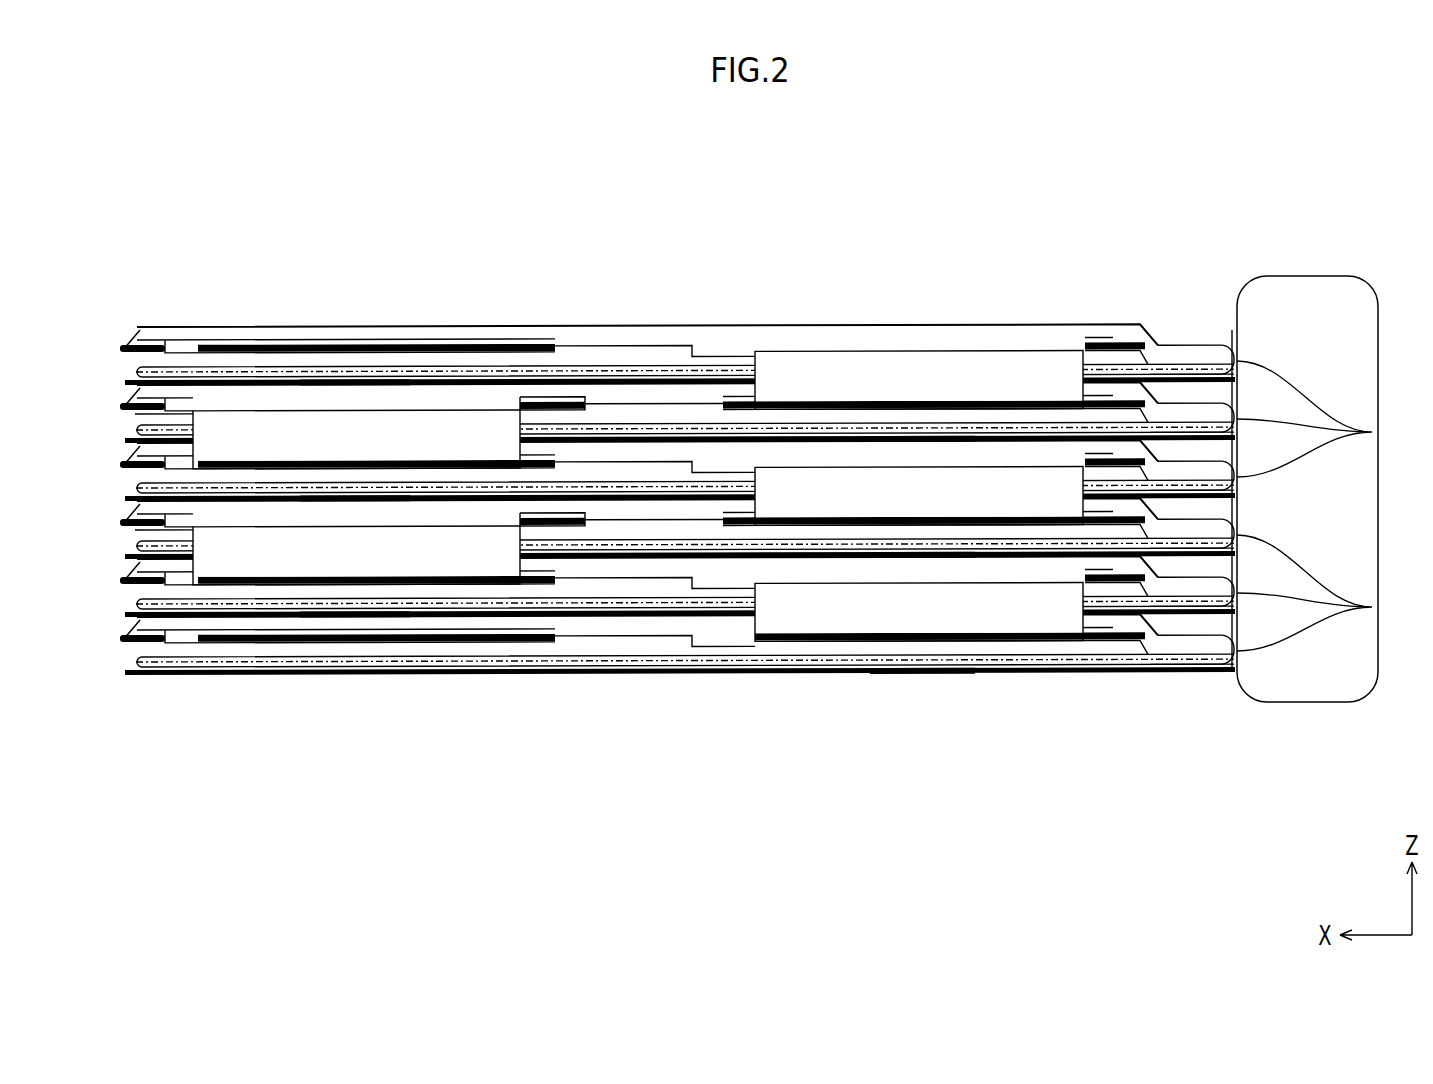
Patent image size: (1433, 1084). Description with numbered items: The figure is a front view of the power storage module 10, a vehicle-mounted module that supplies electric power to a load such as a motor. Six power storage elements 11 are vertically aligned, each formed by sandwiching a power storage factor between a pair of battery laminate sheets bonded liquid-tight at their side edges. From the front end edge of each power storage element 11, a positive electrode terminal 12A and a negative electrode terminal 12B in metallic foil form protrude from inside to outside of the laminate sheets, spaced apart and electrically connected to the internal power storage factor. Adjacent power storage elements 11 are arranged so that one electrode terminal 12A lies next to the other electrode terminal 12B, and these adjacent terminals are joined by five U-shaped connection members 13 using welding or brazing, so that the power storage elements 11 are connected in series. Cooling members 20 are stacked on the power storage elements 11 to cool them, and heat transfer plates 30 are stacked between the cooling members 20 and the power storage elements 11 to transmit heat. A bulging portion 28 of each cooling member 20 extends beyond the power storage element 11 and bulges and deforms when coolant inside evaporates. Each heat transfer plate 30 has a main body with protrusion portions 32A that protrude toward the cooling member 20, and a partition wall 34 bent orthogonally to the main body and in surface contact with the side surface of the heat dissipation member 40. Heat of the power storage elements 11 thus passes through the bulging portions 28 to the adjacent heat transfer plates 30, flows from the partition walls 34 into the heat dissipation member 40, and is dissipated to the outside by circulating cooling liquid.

The power storage module 10 is at (1158, 183).
The power storage element 11 is at (142, 338).
The positive electrode terminal 12A is at (320, 342).
The negative electrode terminal 12B is at (362, 404).
The connection member 13 is at (264, 556).
The cooling member 20 is at (605, 545).
The bulging portion 28 is at (1187, 478).
The heat transfer plate 30 is at (686, 548).
The protrusion portion 32A is at (1212, 355).
The partition wall 34 is at (1372, 432).
The heat dissipation member 40 is at (1340, 305).